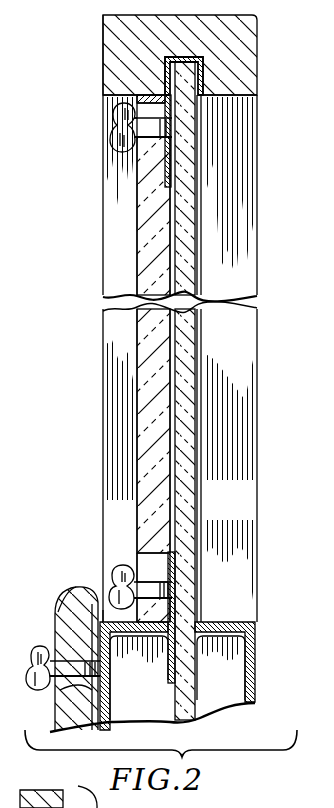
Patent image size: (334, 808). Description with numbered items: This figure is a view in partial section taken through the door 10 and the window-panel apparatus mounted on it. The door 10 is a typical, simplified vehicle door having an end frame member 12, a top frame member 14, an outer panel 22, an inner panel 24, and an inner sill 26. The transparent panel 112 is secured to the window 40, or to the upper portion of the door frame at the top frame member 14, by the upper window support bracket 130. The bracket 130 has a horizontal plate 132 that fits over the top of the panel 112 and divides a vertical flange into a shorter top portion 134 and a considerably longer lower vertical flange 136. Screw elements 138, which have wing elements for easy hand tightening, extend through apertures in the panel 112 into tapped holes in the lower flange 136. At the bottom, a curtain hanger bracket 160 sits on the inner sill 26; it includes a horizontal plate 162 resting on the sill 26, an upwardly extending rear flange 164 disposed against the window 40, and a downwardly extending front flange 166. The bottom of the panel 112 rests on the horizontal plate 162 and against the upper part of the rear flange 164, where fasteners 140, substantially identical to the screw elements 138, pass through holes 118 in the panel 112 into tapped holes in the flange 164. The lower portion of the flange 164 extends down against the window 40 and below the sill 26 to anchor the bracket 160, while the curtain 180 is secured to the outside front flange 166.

The door 10 is at (103, 33).
The end frame member 12 is at (128, 358).
The top frame member 14 is at (107, 52).
The outer panel 22 is at (253, 678).
The inner panel 24 is at (108, 703).
The inner sill 26 is at (108, 608).
The window 40 is at (184, 434).
The transparent panel 112 is at (143, 436).
The holes 118 is at (147, 580).
The upper window support bracket 130 is at (187, 53).
The horizontal plate 132 is at (150, 98).
The top portion of vertical flange 134 is at (166, 67).
The lower vertical flange 136 is at (113, 112).
The screw elements 138 is at (114, 142).
The fasteners 140 is at (115, 575).
The curtain hanger bracket 160 is at (56, 645).
The horizontal plate 162 is at (77, 600).
The rear flange 164 is at (167, 663).
The front flange 166 is at (77, 690).
The curtain 180 is at (81, 645).